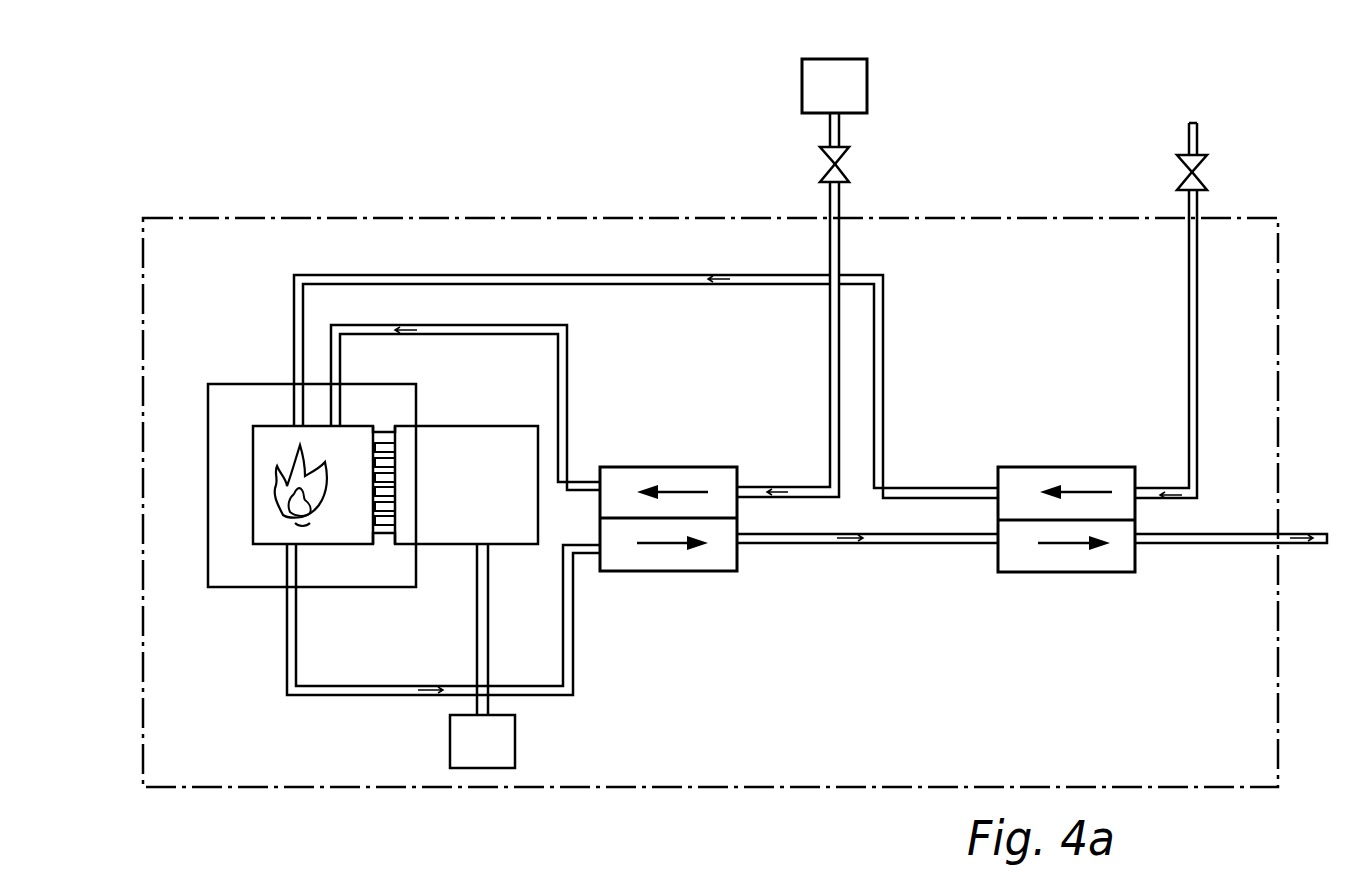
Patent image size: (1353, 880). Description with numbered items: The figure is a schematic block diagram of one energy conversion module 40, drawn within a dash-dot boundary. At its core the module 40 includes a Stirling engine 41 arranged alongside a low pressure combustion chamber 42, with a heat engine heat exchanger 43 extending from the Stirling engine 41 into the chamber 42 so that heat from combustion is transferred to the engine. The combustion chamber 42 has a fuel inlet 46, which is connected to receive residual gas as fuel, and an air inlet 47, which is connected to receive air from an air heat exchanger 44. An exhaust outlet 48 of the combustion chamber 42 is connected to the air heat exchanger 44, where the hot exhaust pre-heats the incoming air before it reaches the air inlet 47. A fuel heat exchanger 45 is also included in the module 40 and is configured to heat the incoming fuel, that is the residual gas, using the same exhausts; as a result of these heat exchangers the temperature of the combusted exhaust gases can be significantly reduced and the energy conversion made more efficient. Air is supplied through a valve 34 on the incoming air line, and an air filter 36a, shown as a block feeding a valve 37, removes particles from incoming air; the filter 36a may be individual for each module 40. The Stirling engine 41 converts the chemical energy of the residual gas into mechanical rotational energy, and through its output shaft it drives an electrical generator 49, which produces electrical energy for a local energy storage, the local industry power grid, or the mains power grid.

The valve 34 is at (1197, 175).
The air filter 36a is at (837, 80).
The valve 37 is at (838, 167).
The module 40 is at (1040, 198).
The Stirling engine 41 is at (520, 460).
The low pressure combustion chamber 42 is at (253, 562).
The heat engine heat exchanger 43 is at (373, 435).
The air heat exchanger 44 is at (683, 467).
The fuel heat exchanger 45 is at (1070, 467).
The fuel inlet 46 is at (297, 427).
The air inlet 47 is at (339, 432).
The exhaust outlet 48 is at (300, 541).
The electrical generator 49 is at (495, 731).